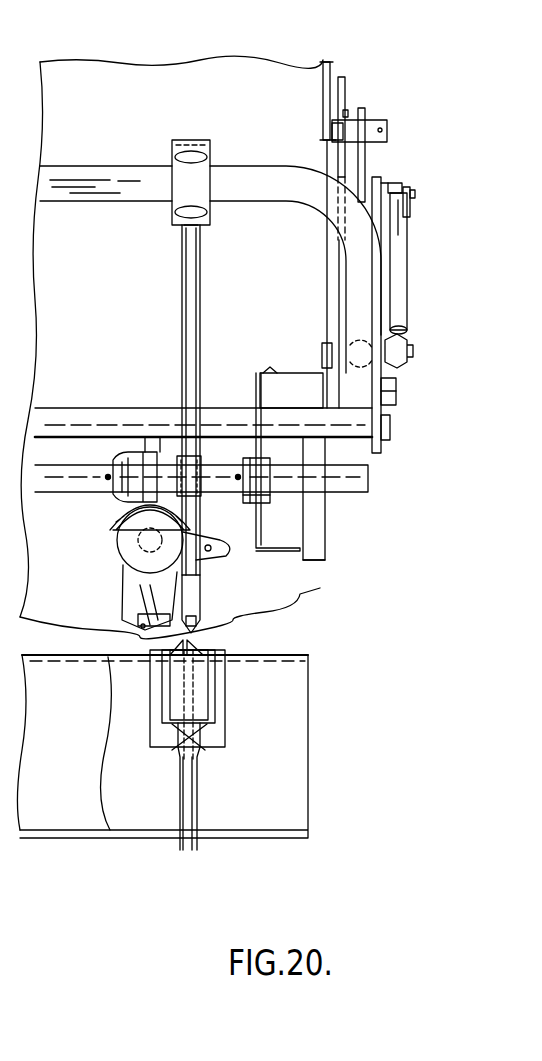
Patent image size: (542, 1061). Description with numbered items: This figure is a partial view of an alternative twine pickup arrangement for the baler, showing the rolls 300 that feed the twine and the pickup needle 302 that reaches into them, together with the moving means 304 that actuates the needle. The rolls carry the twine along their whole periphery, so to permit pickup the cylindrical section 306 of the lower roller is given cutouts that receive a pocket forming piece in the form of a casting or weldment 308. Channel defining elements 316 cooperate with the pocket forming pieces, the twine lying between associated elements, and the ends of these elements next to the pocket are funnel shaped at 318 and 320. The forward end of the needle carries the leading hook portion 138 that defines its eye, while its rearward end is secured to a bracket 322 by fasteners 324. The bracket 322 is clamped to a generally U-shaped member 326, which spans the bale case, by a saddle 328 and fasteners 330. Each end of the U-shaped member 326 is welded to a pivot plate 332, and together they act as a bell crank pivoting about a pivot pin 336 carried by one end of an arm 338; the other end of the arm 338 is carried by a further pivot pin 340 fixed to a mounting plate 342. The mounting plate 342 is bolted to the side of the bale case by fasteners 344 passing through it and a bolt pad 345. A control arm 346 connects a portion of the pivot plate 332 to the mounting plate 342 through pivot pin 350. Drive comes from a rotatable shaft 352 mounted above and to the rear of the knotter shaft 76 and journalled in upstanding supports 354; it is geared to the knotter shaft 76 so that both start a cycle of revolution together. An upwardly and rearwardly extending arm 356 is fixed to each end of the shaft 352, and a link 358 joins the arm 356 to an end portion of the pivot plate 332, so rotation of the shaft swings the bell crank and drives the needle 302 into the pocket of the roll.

The knotter shaft 76 is at (65, 479).
The leading hook portion 138 is at (206, 610).
The rolls 300 is at (114, 853).
The pickup needle 302 is at (182, 306).
The moving means 304 is at (397, 489).
The cylindrical section 306 is at (292, 840).
The weldment 308 is at (200, 690).
The channel defining elements 316 is at (200, 845).
The funnel shaped end 318 is at (196, 748).
The funnel shaped end 320 is at (184, 650).
The bracket 322 is at (196, 227).
The fasteners 324 is at (375, 180).
The U-shaped member 326 is at (115, 172).
The saddle 328 is at (191, 175).
The fasteners 330 is at (178, 158).
The pivot plate 332 is at (393, 183).
The pivot pin 336 is at (397, 388).
The arm 338 is at (370, 392).
The pivot pin 340 is at (326, 345).
The mounting plate 342 is at (324, 148).
The fasteners 344 is at (347, 100).
The bolt pad 345 is at (331, 76).
The control arm 346 is at (368, 150).
The pivot pin 350 is at (376, 124).
The rotatable shaft 352 is at (140, 367).
The upstanding supports 354 is at (253, 540).
The arm 356 is at (391, 427).
The link 358 is at (406, 300).